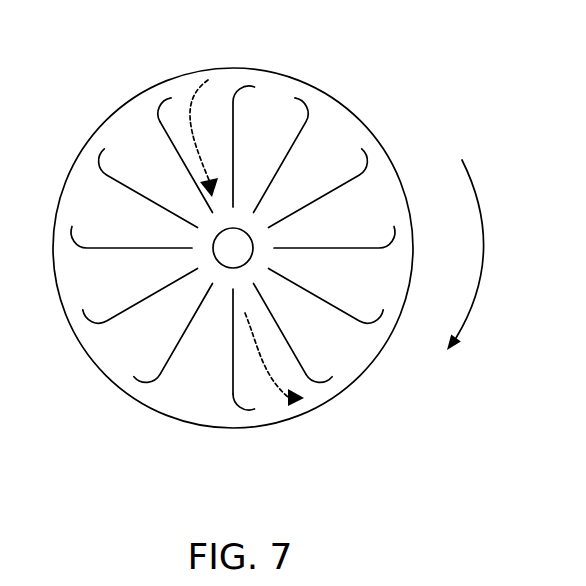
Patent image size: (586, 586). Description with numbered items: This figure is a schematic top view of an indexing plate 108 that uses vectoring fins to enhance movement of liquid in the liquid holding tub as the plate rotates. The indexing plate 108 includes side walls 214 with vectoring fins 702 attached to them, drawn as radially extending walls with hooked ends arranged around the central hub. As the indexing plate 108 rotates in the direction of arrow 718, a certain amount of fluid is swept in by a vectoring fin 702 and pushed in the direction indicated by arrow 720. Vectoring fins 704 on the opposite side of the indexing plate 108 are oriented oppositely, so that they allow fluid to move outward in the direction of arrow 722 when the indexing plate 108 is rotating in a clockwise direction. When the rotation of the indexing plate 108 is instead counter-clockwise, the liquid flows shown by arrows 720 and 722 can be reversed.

The indexing plate 108 is at (380, 98).
The side wall 214 is at (170, 140).
The vectoring fin 702 is at (160, 104).
The vectoring fin 704 is at (240, 406).
The arrow 718 is at (481, 248).
The arrow 720 is at (193, 93).
The arrow 722 is at (270, 398).